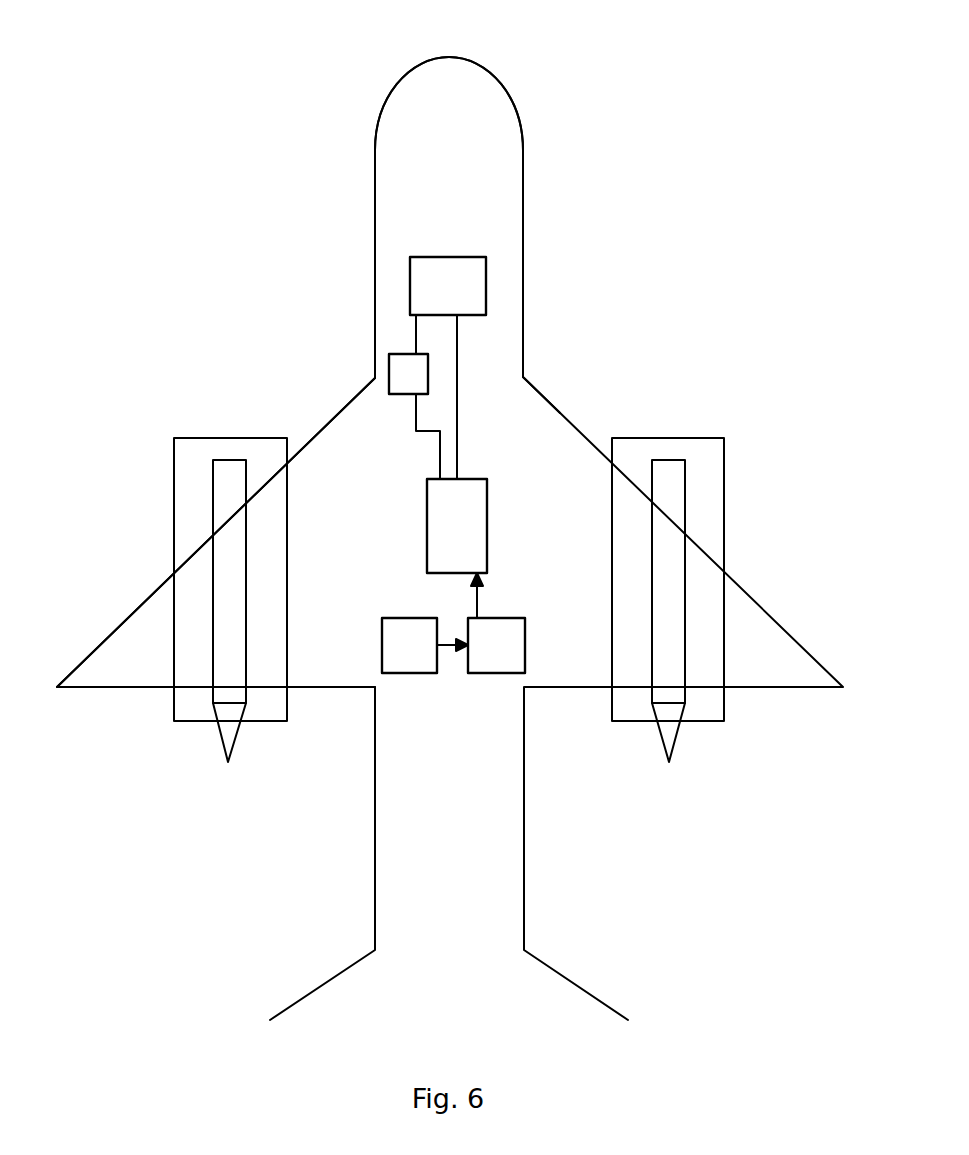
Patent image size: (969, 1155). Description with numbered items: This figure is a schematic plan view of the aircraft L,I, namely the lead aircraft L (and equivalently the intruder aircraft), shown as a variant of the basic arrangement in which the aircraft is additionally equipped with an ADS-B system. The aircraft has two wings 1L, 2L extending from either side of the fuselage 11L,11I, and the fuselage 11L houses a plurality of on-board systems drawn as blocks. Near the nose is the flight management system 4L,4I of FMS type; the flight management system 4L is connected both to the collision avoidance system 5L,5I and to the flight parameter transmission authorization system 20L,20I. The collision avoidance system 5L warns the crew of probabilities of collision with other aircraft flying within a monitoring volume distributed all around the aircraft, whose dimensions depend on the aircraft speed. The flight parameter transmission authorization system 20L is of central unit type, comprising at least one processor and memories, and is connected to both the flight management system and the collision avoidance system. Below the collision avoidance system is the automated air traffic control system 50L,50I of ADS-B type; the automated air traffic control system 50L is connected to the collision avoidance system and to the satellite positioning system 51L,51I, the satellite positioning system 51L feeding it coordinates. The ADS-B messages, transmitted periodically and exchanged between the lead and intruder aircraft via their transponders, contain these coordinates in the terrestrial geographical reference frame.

The aircraft L,I is at (450, 538).
The lead aircraft L is at (545, 151).
The fuselage 11L,11I is at (403, 83).
The fuselage 11L is at (427, 107).
The wing 2L is at (545, 395).
The wing 1L is at (315, 433).
The flight management system 4L,4I is at (527, 275).
The flight management system 4L is at (486, 283).
The flight parameter transmission authorization system 20L,20I is at (340, 328).
The flight parameter transmission authorization system 20L is at (389, 365).
The collision avoidance system 5L,5I is at (359, 446).
The collision avoidance system 5L is at (427, 502).
The satellite positioning system 51L,51I is at (373, 614).
The satellite positioning system 51L is at (405, 618).
The automated air traffic control system 50L,50I is at (536, 608).
The automated air traffic control system 50L is at (507, 618).